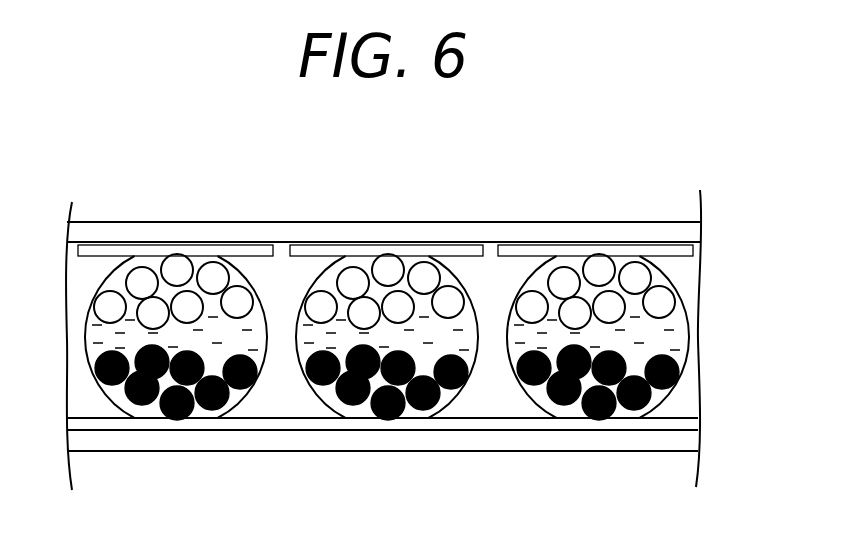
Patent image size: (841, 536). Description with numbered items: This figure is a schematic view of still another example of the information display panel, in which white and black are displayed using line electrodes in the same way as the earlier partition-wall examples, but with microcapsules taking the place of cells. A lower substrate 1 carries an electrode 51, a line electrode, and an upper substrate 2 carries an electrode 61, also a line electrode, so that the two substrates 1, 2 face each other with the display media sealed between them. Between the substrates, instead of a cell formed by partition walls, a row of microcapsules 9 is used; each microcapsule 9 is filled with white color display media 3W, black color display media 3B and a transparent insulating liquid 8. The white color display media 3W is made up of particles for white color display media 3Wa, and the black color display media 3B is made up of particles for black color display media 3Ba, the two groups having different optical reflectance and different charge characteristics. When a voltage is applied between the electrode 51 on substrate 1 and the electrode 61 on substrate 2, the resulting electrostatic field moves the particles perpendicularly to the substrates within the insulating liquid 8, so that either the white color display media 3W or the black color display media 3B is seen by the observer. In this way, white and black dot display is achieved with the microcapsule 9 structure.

The substrate 1 is at (485, 442).
The substrate 2 is at (444, 232).
The electrode 51 is at (557, 425).
The electrode 61 is at (563, 252).
The microcapsule 9 is at (240, 290).
The transparent insulating liquid 8 is at (645, 337).
The white color display media 3W is at (725, 257).
The particles for white color display media 3Wa is at (385, 266).
The black color display media 3B is at (725, 353).
The particles for black color display media 3Ba is at (380, 420).